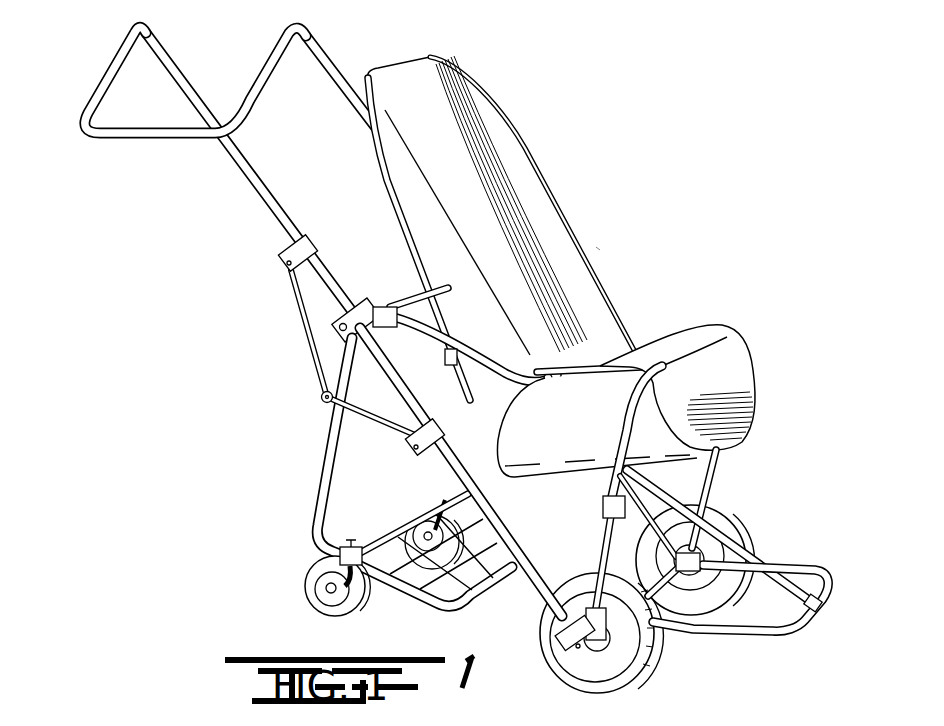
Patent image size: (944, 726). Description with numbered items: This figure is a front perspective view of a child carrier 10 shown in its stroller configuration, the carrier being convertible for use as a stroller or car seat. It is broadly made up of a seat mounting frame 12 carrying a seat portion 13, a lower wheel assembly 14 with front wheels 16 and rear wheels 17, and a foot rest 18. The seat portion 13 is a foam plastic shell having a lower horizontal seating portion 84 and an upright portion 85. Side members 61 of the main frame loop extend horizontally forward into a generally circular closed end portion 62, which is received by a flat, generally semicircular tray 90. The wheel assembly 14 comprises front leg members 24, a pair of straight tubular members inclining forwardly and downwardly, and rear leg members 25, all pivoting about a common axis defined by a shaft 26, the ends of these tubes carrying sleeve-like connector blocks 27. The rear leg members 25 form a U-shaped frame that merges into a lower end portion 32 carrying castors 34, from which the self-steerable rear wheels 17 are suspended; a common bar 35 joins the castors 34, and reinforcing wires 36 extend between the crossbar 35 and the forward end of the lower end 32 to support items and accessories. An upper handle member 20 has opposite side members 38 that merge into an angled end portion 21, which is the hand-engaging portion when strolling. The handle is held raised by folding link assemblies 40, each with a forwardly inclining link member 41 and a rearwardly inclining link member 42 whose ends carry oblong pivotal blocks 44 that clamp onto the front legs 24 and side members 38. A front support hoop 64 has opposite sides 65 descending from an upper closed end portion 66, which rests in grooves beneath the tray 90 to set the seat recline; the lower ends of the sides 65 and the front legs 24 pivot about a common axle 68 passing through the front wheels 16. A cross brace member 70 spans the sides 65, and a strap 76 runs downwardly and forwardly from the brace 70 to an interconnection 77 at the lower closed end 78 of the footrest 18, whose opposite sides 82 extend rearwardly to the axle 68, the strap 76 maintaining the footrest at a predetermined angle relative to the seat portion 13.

The child carrier 10 is at (600, 245).
The seat mounting frame 12 is at (633, 310).
The seat portion 13 is at (501, 228).
The lower wheel assembly 14 is at (299, 446).
The front wheels 16 is at (713, 513).
The rear wheels 17 is at (305, 592).
The foot rest 18 is at (767, 620).
The upper handle member 20 is at (212, 166).
The angled end portion 21 is at (108, 72).
The front leg members 24 is at (487, 508).
The rear leg members 25 is at (338, 450).
The shaft 26 is at (335, 328).
The connector blocks 27 is at (353, 343).
The lower end portion 32 is at (440, 567).
The castors 34 is at (338, 562).
The common bar 35 is at (403, 521).
The reinforcing wires 36 is at (483, 587).
The side members 38 is at (320, 38).
The folding link assemblies 40 is at (318, 397).
The link members 41 is at (392, 427).
The link members 42 is at (305, 303).
The pivotal blocks 44 is at (287, 253).
The armrest tube 61 is at (430, 336).
The closed end portion 62 is at (548, 383).
The front support hoop 64 is at (616, 424).
The opposite sides 65 is at (598, 557).
The closed end portion 66 is at (655, 370).
The common axle 68 is at (680, 612).
The cross brace member 70 is at (620, 478).
The strap 76 is at (750, 548).
The interconnection 77 is at (822, 610).
The lower closed end 78 is at (827, 590).
The opposite sides 82 is at (733, 637).
The lower horizontal seating portion 84 is at (730, 367).
The upright portion 85 is at (537, 212).
The tray 90 is at (697, 365).